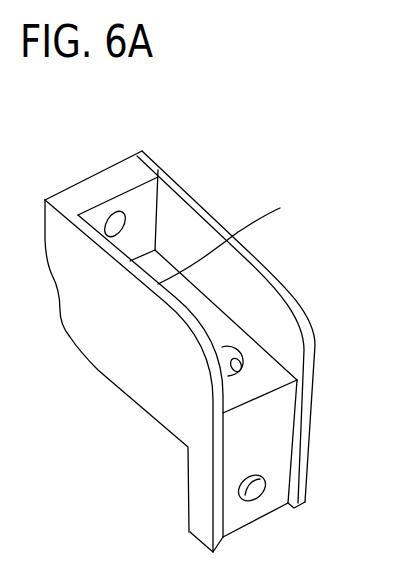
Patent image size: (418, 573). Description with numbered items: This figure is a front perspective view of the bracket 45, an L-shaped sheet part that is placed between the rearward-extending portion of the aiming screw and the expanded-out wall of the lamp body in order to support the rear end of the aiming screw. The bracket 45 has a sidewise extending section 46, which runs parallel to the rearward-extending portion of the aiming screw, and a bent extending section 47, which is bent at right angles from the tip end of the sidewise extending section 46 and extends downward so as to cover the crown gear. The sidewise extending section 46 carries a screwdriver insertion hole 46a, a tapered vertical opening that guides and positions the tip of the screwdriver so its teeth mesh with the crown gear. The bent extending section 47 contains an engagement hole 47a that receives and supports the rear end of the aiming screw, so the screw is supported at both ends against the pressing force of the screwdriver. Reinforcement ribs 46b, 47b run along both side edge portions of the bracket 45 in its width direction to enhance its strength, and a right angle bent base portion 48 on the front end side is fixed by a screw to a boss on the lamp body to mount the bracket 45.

The bracket 45 is at (84, 380).
The sidewise extending section 46 is at (217, 318).
The screwdriver insertion hole 46a is at (314, 343).
The reinforcement rib 46b is at (194, 196).
The bent extending section 47 is at (277, 430).
The engagement hole 47a is at (266, 489).
The reinforcement rib 47b is at (150, 417).
The right angle bent base portion 48 is at (138, 195).